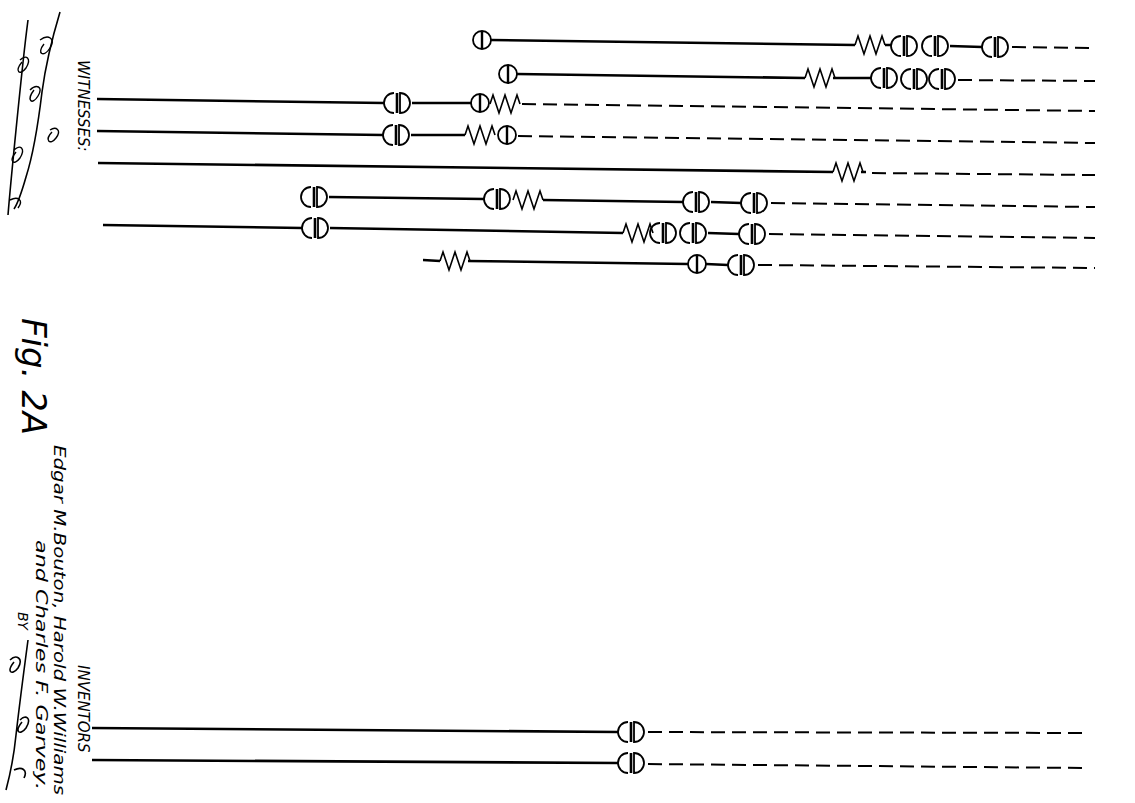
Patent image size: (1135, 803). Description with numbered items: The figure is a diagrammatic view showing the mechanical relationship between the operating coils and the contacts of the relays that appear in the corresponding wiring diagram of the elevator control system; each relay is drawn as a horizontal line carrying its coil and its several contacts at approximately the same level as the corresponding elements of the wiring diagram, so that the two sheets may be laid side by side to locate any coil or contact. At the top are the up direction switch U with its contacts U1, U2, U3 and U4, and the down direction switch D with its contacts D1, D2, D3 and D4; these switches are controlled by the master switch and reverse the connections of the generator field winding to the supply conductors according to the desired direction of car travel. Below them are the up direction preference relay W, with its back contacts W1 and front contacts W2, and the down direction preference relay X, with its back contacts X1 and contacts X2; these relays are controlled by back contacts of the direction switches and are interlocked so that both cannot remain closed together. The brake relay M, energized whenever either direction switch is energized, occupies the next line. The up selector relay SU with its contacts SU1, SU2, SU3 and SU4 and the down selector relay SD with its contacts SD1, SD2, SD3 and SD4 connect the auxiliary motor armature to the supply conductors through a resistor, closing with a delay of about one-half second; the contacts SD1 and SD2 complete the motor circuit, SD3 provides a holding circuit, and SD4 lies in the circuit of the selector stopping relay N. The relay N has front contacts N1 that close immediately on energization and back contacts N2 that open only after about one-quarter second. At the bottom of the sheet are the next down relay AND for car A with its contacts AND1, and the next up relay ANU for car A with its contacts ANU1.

The up direction switch U is at (869, 42).
The contacts of up direction switch U1 is at (998, 46).
The contacts of up direction switch U2 is at (935, 38).
The contacts of up direction switch U3 is at (904, 38).
The contacts of up direction switch U4 is at (472, 40).
The down direction switch D is at (807, 73).
The contacts of down direction switch D1 is at (952, 77).
The contacts of down direction switch D2 is at (912, 71).
The contacts of down direction switch D3 is at (872, 71).
The contacts of down direction switch D4 is at (497, 74).
The up direction preference relay W is at (515, 101).
The back contacts of up direction preference relay W1 is at (471, 100).
The front contacts of up direction preference relay W2 is at (393, 98).
The down direction preference relay X is at (469, 131).
The back contacts of down direction preference relay X1 is at (518, 131).
The contacts of down direction preference relay X2 is at (383, 130).
The brake relay M is at (858, 168).
The up selector relay SU is at (538, 198).
The contacts of up selector relay SU1 is at (765, 195).
The contacts of up selector relay SU2 is at (702, 191).
The contacts of up selector relay SU3 is at (484, 193).
The contacts of up selector relay SU4 is at (331, 191).
The down selector relay SD is at (618, 240).
The contacts of down selector relay SD1 is at (768, 227).
The contacts of down selector relay SD2 is at (700, 227).
The contacts of down selector relay SD3 is at (660, 223).
The contacts of down selector relay SD4 is at (332, 223).
The selector stopping relay N is at (452, 266).
The front contacts of selector stopping relay N1 is at (751, 262).
The back contacts of selector stopping relay N2 is at (687, 262).
The next down relay car A AND is at (605, 734).
The contacts of next down relay car A AND1 is at (645, 731).
The next up relay car A ANU is at (605, 768).
The contacts of next up relay car A ANU1 is at (645, 764).